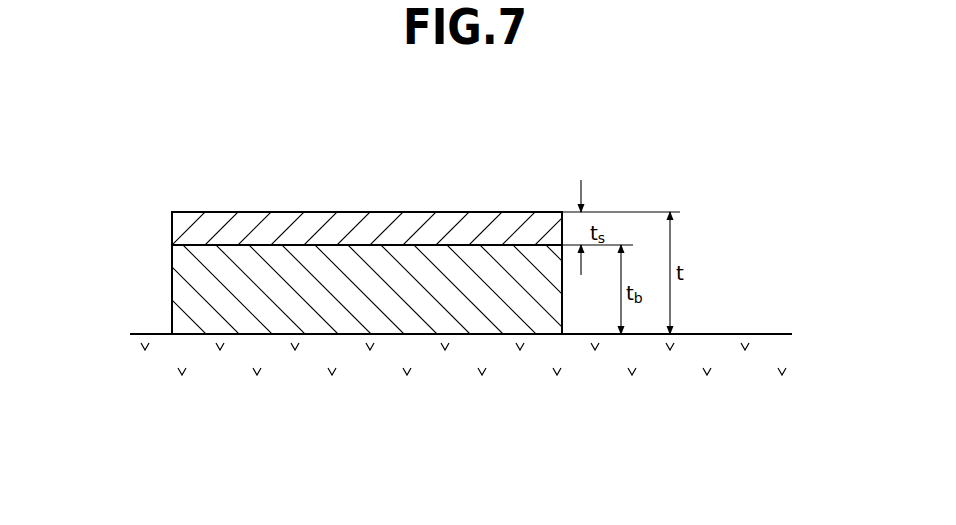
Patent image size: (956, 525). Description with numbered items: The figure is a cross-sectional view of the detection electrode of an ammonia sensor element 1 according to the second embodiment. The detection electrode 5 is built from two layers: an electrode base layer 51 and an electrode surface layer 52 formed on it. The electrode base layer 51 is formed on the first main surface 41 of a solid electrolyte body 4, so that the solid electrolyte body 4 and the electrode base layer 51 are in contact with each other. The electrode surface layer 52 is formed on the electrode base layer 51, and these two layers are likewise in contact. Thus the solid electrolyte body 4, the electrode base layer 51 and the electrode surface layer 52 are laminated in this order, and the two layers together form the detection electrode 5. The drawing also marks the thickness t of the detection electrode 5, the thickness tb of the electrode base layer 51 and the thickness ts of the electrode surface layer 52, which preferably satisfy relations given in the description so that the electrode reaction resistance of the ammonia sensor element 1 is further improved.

The ammonia sensor element 1 is at (505, 162).
The solid electrolyte body 4 is at (720, 353).
The first main surface 41 is at (153, 334).
The detection electrode 5 is at (376, 201).
The electrode base layer 51 is at (338, 282).
The electrode surface layer 52 is at (412, 228).